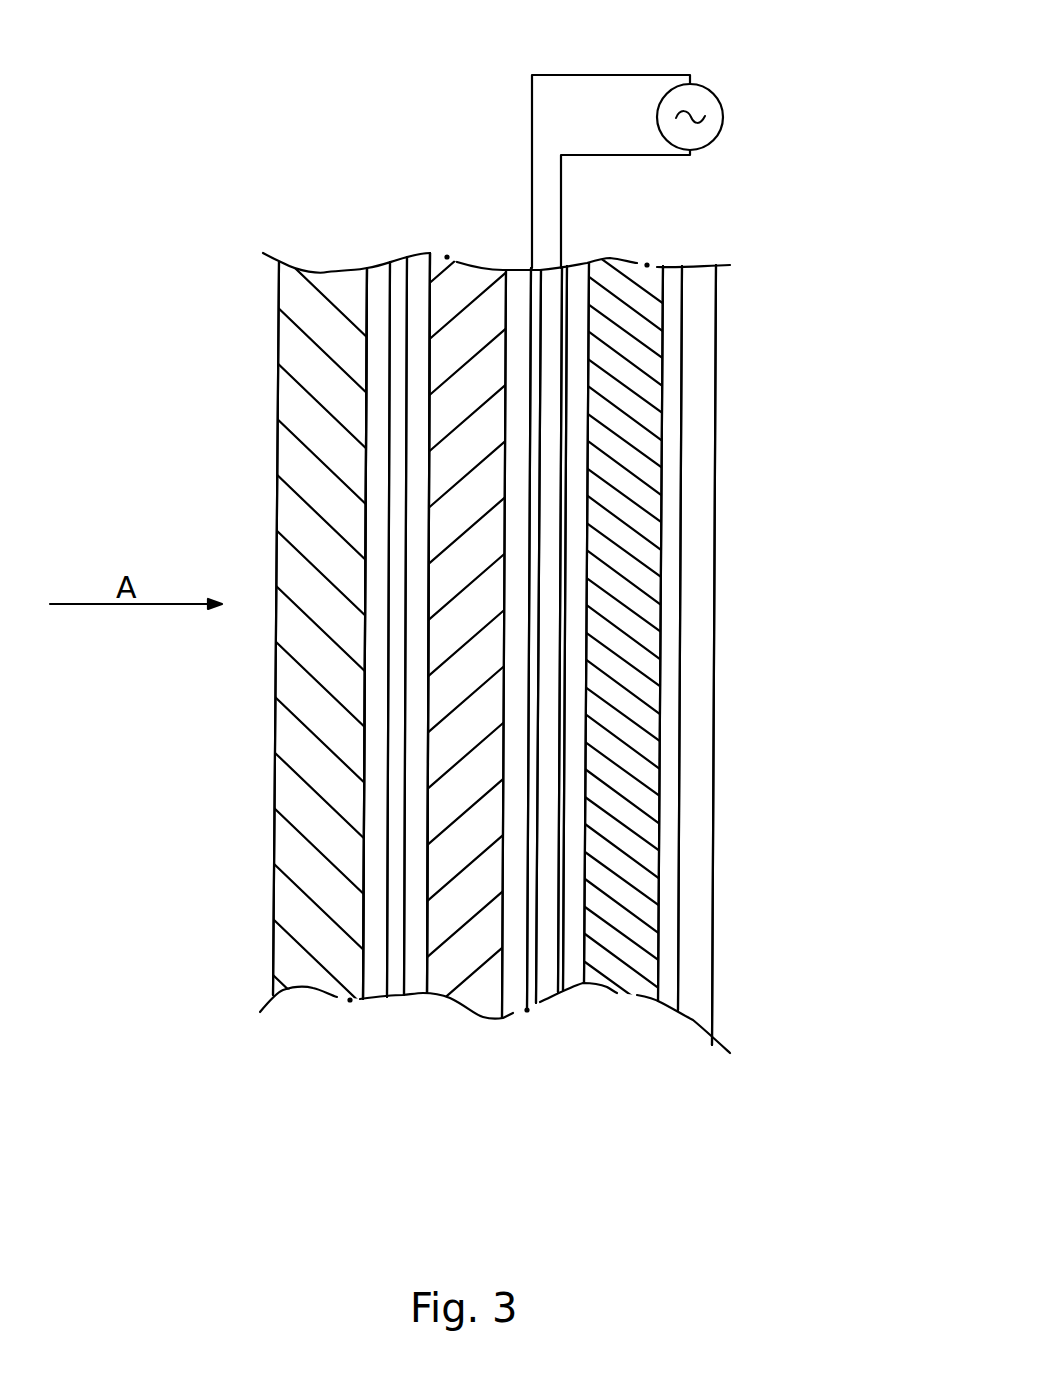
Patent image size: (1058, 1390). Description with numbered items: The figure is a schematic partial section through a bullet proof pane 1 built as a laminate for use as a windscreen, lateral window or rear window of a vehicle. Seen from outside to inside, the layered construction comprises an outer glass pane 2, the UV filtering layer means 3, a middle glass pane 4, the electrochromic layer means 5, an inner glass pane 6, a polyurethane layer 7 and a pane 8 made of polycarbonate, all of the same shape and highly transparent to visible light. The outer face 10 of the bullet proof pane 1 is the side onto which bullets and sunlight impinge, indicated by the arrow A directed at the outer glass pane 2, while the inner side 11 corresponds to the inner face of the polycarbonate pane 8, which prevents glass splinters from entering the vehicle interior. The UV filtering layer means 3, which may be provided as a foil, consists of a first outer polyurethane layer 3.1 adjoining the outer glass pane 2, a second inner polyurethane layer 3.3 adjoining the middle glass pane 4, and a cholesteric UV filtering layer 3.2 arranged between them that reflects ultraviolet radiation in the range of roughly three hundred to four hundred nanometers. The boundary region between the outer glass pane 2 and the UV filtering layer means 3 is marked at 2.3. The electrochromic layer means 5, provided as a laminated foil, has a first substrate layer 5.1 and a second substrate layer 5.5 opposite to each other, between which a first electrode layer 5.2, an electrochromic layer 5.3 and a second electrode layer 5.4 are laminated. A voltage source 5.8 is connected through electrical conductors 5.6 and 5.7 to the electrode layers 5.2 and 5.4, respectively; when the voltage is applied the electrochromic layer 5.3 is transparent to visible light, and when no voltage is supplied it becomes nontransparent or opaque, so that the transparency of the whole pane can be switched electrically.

The bullet proof pane 1 is at (220, 1075).
The outer glass pane 2 is at (307, 978).
The surface of first layer 2.3 is at (388, 333).
The UV filtering layer means 3 is at (413, 983).
The first outer polyurethane layer 3.1 is at (377, 272).
The UV filtering layer 3.2 is at (398, 273).
The second inner polyurethane layer 3.3 is at (417, 263).
The middle glass pane 4 is at (465, 995).
The electrochromic layer means 5 is at (580, 983).
The first substrate layer 5.1 is at (518, 340).
The first electrode layer 5.2 is at (531, 290).
The electrochromic layer 5.3 is at (547, 510).
The second electrode layer 5.4 is at (558, 467).
The second substrate layer 5.5 is at (577, 413).
The electrical conductor 5.6 is at (580, 75).
The electrical conductor 5.7 is at (628, 158).
The voltage source 5.8 is at (715, 127).
The inner glass pane 6 is at (617, 978).
The polyurethane layer 7 is at (655, 988).
The polycarbonate pane 8 is at (703, 972).
The outer face 10 is at (268, 784).
The inner side 11 is at (722, 718).